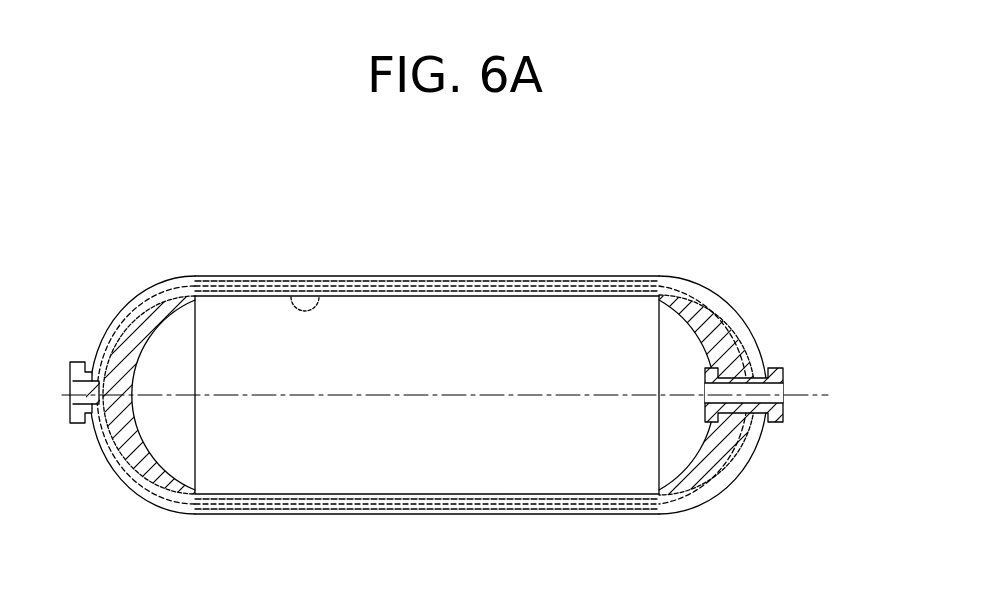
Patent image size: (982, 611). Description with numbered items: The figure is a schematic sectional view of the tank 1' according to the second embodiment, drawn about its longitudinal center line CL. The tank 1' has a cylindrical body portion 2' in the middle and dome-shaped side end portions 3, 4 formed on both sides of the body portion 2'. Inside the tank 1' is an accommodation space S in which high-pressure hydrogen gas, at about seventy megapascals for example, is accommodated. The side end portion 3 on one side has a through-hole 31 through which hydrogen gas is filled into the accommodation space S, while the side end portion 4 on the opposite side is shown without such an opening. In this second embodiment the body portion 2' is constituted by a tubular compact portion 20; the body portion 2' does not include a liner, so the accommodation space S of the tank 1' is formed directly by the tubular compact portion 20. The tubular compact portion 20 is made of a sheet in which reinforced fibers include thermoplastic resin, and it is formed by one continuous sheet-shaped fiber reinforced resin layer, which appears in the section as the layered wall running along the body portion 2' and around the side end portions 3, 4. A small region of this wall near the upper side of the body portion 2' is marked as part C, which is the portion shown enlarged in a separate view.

The tank 1' is at (758, 201).
The body portion 2' is at (428, 356).
The tubular compact portion 20 is at (405, 275).
The side end portion 3 is at (740, 447).
The through-hole 31 is at (783, 403).
The side end portion 4 is at (113, 445).
The part C is at (305, 320).
The accommodation space S is at (588, 453).
The center line CL is at (461, 396).